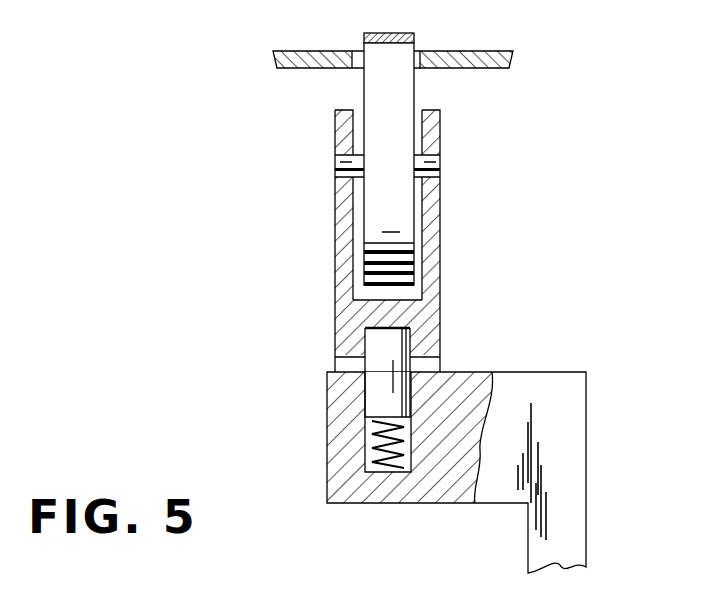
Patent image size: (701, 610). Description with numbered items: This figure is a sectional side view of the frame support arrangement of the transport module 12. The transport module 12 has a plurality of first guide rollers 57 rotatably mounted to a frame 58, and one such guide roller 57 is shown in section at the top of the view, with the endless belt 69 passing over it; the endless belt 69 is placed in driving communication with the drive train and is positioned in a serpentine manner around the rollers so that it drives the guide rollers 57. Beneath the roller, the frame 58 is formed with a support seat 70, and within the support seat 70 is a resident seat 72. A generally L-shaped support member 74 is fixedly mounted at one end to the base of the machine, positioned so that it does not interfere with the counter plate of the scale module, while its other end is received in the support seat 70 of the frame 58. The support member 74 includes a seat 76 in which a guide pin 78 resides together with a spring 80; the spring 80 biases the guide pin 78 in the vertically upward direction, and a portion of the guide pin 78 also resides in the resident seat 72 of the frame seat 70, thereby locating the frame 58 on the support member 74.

The transport module 12 is at (305, 275).
The first guide roller 57 is at (363, 95).
The frame 58 is at (438, 218).
The endless belt 69 is at (400, 33).
The support seat 70 is at (345, 358).
The resident seat 72 is at (433, 343).
The support member 74 is at (538, 371).
The seat 76 is at (368, 438).
The guide pin 78 is at (378, 383).
The spring 80 is at (372, 458).